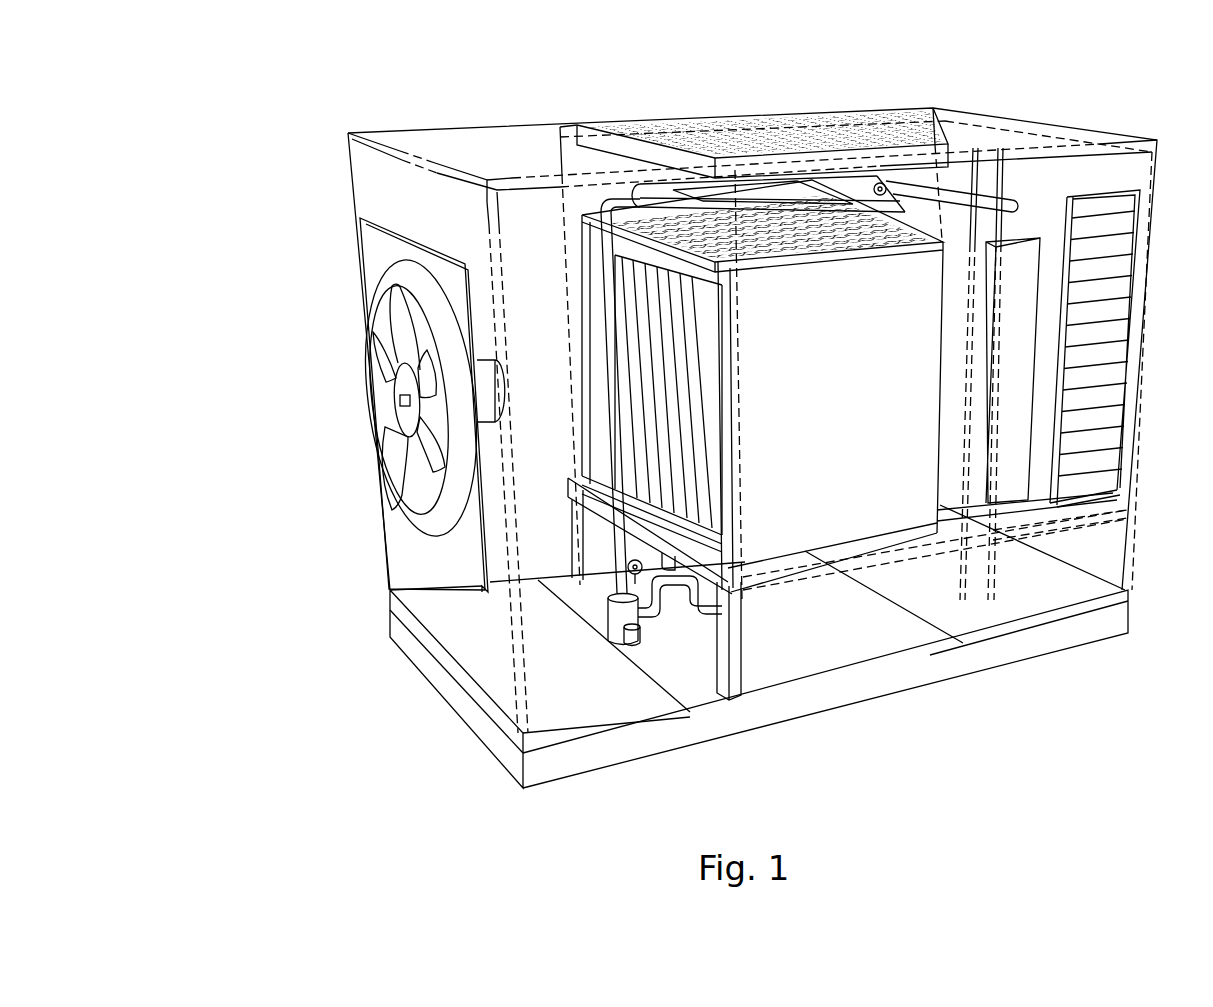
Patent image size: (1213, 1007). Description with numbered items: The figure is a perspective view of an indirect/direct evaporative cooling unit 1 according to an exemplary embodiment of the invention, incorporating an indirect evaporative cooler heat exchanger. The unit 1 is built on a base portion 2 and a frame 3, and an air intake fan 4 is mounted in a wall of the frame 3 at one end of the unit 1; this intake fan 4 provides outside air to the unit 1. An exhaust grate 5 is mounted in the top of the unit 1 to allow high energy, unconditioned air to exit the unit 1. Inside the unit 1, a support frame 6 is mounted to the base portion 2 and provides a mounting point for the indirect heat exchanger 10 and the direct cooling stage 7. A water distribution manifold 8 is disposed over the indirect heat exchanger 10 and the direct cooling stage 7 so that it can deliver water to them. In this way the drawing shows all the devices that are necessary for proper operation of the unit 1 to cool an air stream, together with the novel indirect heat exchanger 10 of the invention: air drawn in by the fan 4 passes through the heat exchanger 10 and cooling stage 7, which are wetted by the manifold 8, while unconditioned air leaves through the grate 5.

The indirect/direct evaporative cooling unit 1 is at (312, 130).
The base portion 2 is at (1060, 633).
The frame 3 is at (486, 141).
The air intake fan 4 is at (380, 390).
The exhaust grate 5 is at (712, 130).
The support frame 6 is at (740, 665).
The direct cooling stage 7 is at (1025, 275).
The water distribution manifold 8 is at (838, 185).
The indirect heat exchanger 10 is at (830, 487).